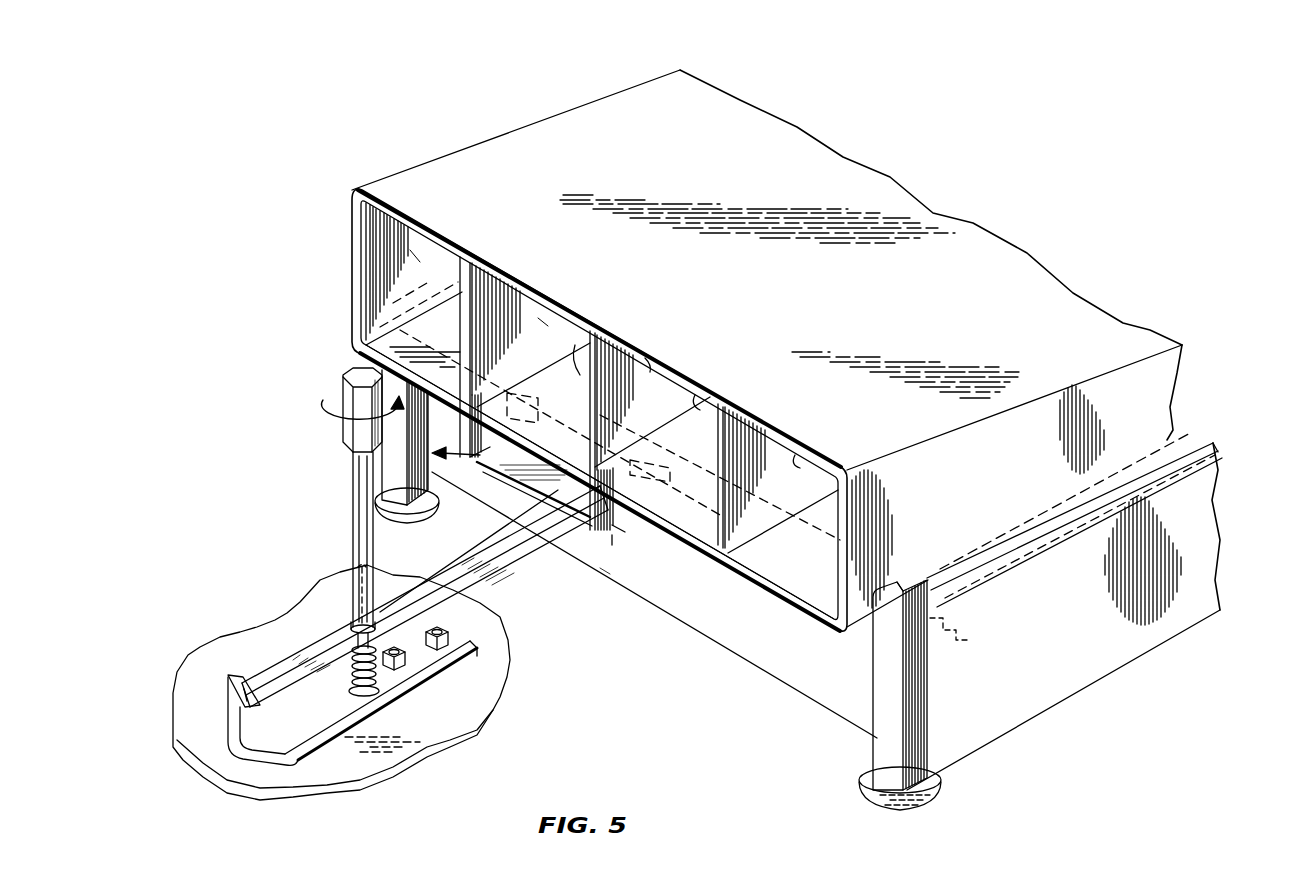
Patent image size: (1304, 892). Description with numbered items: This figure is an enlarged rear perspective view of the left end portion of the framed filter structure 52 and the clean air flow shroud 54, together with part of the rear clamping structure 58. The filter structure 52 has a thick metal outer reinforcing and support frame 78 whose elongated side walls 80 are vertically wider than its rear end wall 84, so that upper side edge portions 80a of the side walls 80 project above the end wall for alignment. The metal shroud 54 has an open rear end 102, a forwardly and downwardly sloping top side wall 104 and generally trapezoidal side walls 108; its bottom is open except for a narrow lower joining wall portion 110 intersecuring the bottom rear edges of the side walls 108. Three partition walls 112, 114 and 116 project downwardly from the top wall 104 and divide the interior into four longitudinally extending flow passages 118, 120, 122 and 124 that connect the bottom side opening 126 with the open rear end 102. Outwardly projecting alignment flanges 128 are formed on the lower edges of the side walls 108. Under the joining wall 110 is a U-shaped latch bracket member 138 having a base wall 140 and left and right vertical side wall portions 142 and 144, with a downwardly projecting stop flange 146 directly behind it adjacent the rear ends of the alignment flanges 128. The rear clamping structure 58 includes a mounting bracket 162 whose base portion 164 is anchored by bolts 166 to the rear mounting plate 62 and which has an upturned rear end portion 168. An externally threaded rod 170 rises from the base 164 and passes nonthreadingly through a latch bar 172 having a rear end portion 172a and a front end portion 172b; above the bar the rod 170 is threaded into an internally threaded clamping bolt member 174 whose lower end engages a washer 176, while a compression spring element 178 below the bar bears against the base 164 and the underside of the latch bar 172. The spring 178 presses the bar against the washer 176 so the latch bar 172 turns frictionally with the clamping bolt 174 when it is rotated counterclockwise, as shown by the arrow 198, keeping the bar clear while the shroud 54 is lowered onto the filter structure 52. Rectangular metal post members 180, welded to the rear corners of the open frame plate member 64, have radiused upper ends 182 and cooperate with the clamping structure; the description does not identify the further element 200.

The framed panel type filter structure 52 is at (864, 594).
The clean air flow shroud 54 is at (537, 118).
The rear clamping structure 58 is at (318, 543).
The rear mounting plate 62 is at (470, 732).
The open frame plate member 64 is at (945, 800).
The outer reinforcing and support frame 78 is at (1070, 692).
The side walls 80 is at (1212, 533).
The upper side edge portions 80a is at (1216, 442).
The rear end wall 84 is at (717, 626).
The open rear end 102 is at (655, 362).
The top side wall 104 is at (769, 262).
The side walls 108 is at (1002, 480).
The lower joining wall portion 110 is at (798, 594).
The partition wall 112 is at (476, 284).
The partition wall 114 is at (607, 360).
The partition wall 116 is at (742, 428).
The flow passage 118 is at (413, 258).
The flow passage 120 is at (545, 325).
The flow passage 122 is at (702, 395).
The flow passage 124 is at (805, 455).
The bottom side opening 126 is at (577, 345).
The alignment flanges 128 is at (399, 298).
The latch bracket member 138 is at (618, 544).
The base wall 140 is at (530, 503).
The left vertical side wall portion 142 is at (470, 442).
The right vertical side wall portion 144 is at (623, 527).
The stop flange 146 is at (968, 631).
The mounting bracket 162 is at (365, 692).
The base portion 164 is at (392, 699).
The bolts 166 is at (410, 652).
The upturned rear end portion 168 is at (242, 717).
The externally threaded cylindrical rod 170 is at (352, 583).
The latch bar 172 is at (416, 596).
The rear end portion 172a is at (322, 640).
The front end portion 172b is at (573, 516).
The clamping bolt member 174 is at (328, 539).
The washer 176 is at (352, 632).
The compression spring element 178 is at (350, 690).
The post members 180 is at (920, 693).
The radiused upper ends 182 is at (883, 588).
The arrow 198 is at (328, 437).
The pin 200 is at (490, 467).